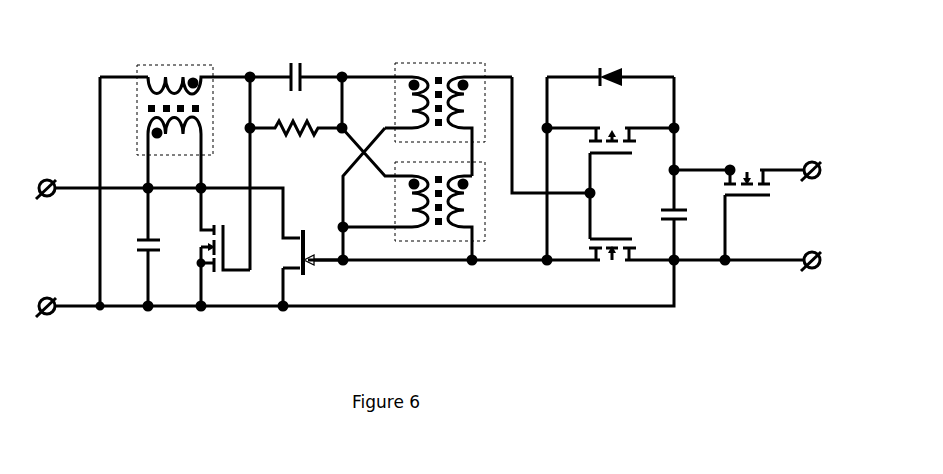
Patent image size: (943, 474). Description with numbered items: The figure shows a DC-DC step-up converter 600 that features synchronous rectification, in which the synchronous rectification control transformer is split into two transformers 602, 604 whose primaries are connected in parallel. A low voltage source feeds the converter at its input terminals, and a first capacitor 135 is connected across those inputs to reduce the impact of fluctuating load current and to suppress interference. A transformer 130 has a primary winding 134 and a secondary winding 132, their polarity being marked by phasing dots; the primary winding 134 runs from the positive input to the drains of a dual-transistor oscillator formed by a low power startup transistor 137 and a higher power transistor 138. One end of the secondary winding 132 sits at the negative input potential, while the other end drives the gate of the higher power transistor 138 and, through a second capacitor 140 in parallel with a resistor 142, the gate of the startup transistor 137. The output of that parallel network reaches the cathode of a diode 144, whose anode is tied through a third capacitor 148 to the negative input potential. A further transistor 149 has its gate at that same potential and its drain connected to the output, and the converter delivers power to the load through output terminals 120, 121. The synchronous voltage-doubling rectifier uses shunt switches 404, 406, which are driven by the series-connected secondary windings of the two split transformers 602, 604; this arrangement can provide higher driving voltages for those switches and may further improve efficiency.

The DC-DC step-up converter 600 is at (443, 193).
The positive output terminal 120 is at (817, 165).
The negative output terminal 121 is at (807, 268).
The transformer 130 is at (137, 112).
The secondary winding 132 is at (138, 77).
The primary winding 134 is at (150, 118).
The capacitor C1 135 is at (152, 247).
The low power startup transistor J1 137 is at (290, 272).
The higher power transistor M1 138 is at (230, 238).
The capacitor C2 140 is at (298, 62).
The resistor R1 142 is at (293, 137).
The diode D1 144 is at (608, 67).
The capacitor C3 148 is at (675, 217).
The transistor M4 149 is at (728, 168).
The shunt switch M2 404 is at (640, 308).
The shunt switch M3 406 is at (618, 147).
The transformer TF2A 602 is at (450, 62).
The transformer TF2B 604 is at (475, 233).